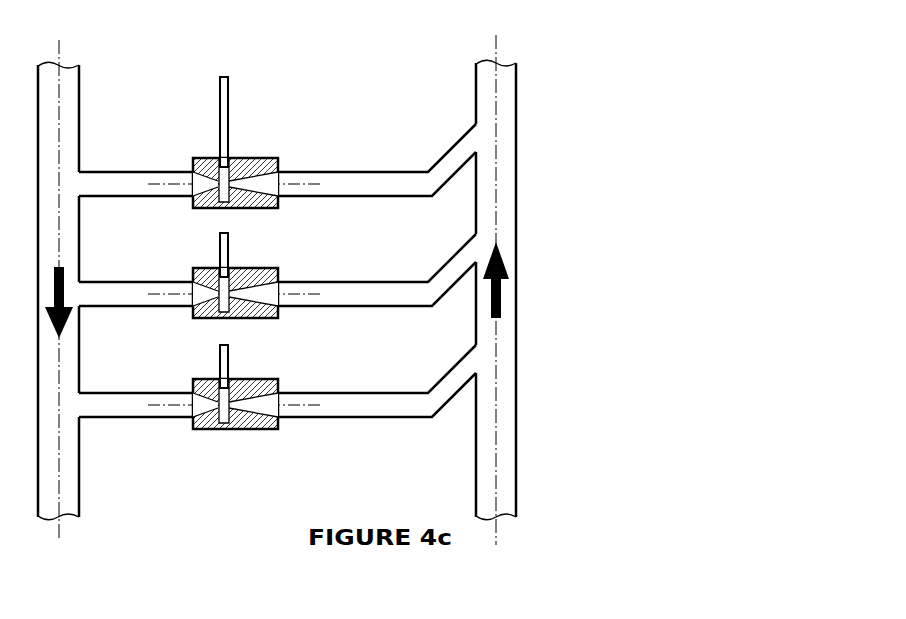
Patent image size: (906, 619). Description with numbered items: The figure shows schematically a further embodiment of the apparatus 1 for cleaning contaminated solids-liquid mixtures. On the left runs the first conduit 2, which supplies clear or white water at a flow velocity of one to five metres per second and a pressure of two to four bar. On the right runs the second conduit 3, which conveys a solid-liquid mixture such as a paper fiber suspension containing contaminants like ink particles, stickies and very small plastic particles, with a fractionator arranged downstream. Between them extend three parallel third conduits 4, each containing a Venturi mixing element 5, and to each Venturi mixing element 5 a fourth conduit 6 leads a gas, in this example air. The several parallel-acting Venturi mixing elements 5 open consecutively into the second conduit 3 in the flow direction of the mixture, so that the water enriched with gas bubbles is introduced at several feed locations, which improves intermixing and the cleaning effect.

The apparatus 1 is at (410, 46).
The first conduit 2 is at (82, 85).
The second conduit 3 is at (517, 105).
The third conduit 4 is at (385, 392).
The Venturi mixing element 5 is at (260, 382).
The fourth conduit 6 is at (228, 365).